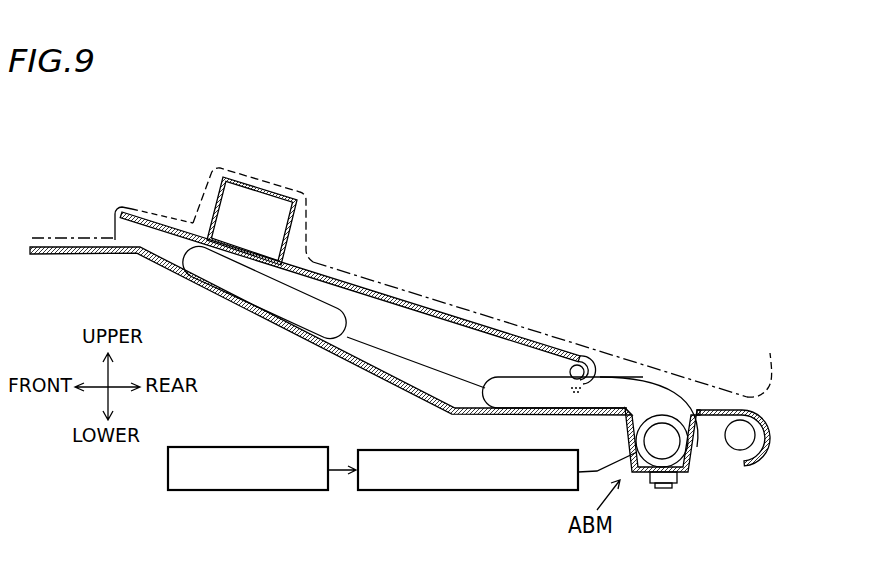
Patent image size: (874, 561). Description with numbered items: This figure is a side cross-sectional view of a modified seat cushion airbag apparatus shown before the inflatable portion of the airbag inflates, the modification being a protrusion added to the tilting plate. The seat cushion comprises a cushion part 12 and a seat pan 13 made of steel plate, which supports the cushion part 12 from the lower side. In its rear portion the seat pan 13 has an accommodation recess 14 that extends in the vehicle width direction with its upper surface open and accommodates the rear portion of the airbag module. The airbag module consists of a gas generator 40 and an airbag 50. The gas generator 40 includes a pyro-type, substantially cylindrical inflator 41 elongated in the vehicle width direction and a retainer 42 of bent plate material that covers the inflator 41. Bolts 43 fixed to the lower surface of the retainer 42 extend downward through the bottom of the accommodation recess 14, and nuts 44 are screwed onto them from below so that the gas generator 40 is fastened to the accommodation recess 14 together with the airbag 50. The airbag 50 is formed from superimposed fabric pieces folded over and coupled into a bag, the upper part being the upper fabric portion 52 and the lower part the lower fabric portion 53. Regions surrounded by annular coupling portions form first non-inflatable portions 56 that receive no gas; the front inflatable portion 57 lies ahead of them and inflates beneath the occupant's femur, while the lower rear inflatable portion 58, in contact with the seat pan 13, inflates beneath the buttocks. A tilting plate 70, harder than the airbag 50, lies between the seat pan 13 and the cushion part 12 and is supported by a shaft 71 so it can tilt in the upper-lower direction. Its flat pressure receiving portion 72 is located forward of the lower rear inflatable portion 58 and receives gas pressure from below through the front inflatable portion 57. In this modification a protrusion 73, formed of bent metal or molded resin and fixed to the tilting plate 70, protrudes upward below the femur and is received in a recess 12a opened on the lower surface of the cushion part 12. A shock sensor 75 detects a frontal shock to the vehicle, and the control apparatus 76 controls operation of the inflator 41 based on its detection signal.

The cushion part 12 is at (32, 238).
The recess 12a is at (299, 194).
The seat pan 13 is at (165, 262).
The accommodation recess 14 is at (700, 407).
The gas generator 40 is at (690, 323).
The inflator 41 is at (652, 433).
The retainer 42 is at (660, 420).
The bolt 43 is at (662, 488).
The nut 44 is at (672, 485).
The airbag 50 is at (413, 346).
The upper fabric portion 52 is at (357, 289).
The lower fabric portion 53 is at (343, 355).
The first non-inflatable portion 56 is at (413, 357).
The front inflatable portion 57 is at (331, 275).
The lower rear inflatable portion 58 is at (508, 376).
The tilting plate 70 is at (206, 188).
The shaft 71 is at (570, 366).
The pressure receiving portion 72 is at (173, 221).
The protrusion 73 is at (262, 178).
The shock sensor 75 is at (288, 490).
The control apparatus 76 is at (468, 492).